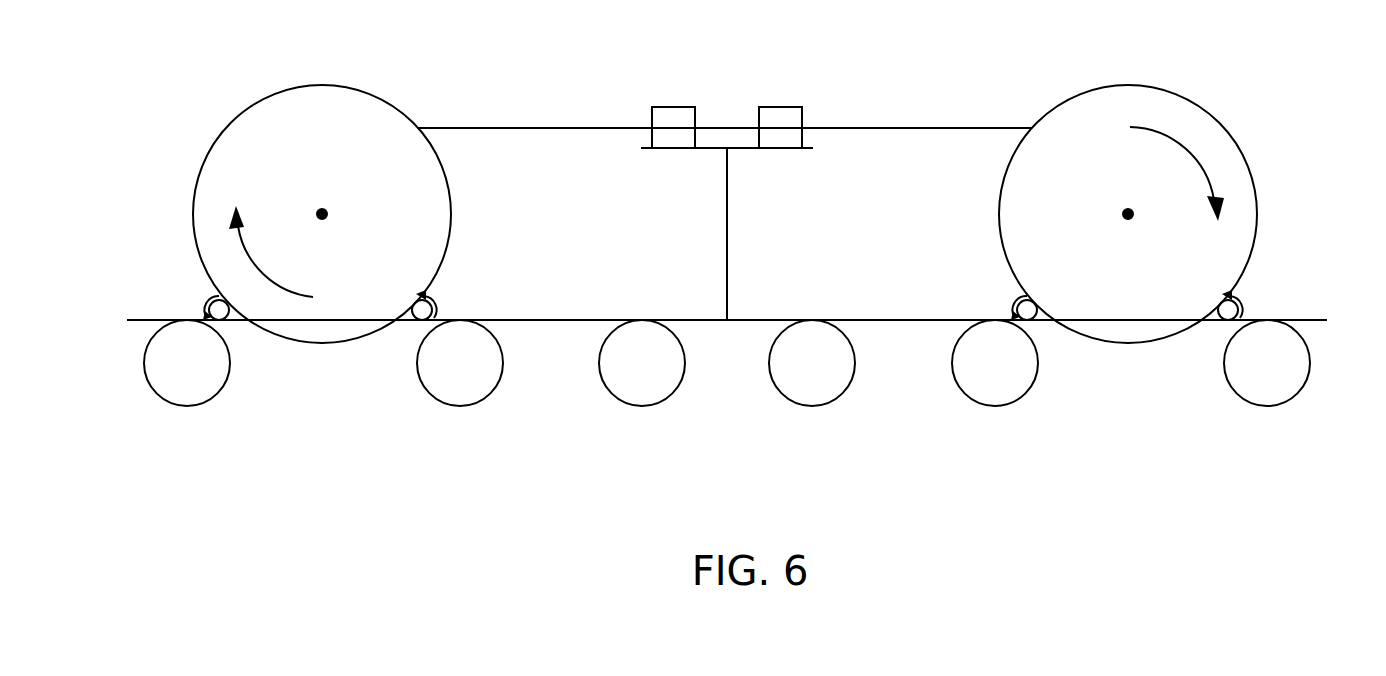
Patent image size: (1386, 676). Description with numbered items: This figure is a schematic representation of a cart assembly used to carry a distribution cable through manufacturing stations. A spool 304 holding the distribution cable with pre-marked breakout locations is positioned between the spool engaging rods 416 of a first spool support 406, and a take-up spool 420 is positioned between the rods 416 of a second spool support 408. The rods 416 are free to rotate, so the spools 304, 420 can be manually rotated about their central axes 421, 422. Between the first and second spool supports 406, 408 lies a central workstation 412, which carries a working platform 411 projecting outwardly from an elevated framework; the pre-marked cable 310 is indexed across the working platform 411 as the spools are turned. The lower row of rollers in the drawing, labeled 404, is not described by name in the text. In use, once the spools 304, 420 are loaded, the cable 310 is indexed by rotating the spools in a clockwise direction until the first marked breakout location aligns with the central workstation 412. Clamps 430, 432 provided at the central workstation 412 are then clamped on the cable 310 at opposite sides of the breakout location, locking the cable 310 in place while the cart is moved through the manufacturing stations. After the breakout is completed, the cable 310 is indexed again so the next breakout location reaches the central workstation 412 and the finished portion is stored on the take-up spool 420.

The spool 304 is at (225, 128).
The cable 310 is at (545, 128).
The support rollers 404 is at (185, 407).
The first spool support 406 is at (148, 320).
The second spool support 408 is at (1305, 320).
The working platform 411 is at (707, 149).
The central workstation 412 is at (727, 178).
The spool engaging rods 416 is at (407, 320).
The take-up spool 420 is at (1228, 132).
The central axis 421 is at (327, 217).
The central axis 422 is at (1138, 218).
The clamp 430 is at (667, 107).
The clamp 432 is at (793, 107).